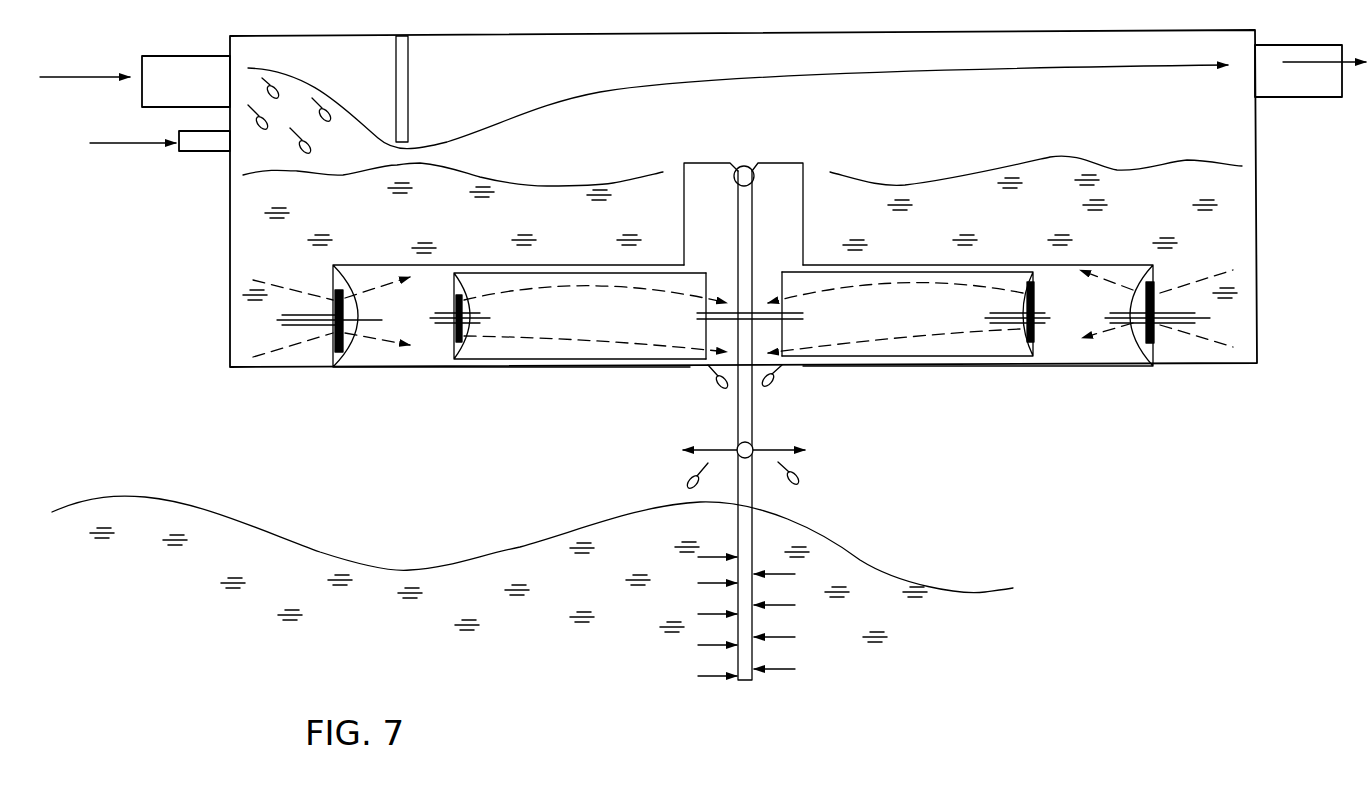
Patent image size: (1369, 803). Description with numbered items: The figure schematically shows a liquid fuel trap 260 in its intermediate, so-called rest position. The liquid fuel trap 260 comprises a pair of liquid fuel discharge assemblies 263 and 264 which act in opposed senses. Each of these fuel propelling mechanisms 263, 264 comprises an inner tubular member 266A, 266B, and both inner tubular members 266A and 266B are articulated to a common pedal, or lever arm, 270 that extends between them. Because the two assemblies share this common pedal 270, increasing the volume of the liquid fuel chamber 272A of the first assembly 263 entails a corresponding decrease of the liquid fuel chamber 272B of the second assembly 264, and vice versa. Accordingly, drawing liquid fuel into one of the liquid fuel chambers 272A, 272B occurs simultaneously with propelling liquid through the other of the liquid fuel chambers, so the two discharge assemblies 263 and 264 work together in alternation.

The liquid fuel trap 260 is at (190, 364).
The liquid fuel discharge assembly 263 is at (622, 385).
The liquid fuel discharge assembly 264 is at (1073, 407).
The inner tubular member 266A is at (553, 358).
The inner tubular member 266B is at (885, 356).
The common pedal 270 is at (753, 406).
The liquid fuel chamber 272A is at (440, 344).
The liquid fuel chamber 272B is at (1087, 350).